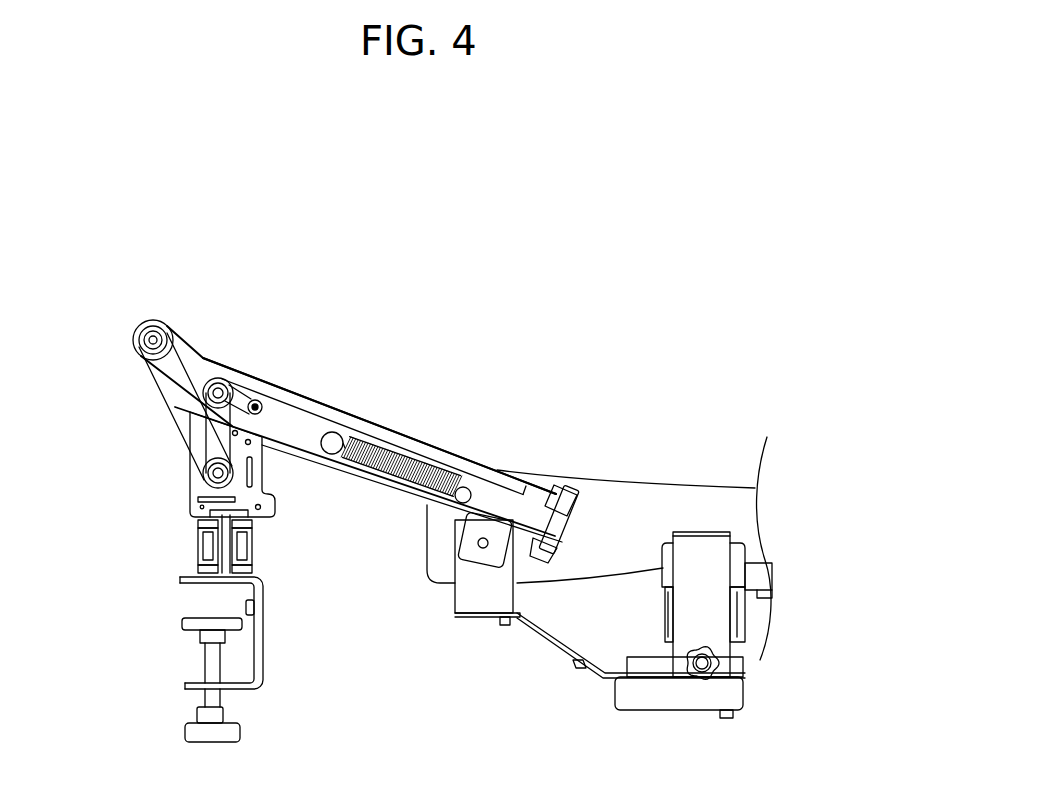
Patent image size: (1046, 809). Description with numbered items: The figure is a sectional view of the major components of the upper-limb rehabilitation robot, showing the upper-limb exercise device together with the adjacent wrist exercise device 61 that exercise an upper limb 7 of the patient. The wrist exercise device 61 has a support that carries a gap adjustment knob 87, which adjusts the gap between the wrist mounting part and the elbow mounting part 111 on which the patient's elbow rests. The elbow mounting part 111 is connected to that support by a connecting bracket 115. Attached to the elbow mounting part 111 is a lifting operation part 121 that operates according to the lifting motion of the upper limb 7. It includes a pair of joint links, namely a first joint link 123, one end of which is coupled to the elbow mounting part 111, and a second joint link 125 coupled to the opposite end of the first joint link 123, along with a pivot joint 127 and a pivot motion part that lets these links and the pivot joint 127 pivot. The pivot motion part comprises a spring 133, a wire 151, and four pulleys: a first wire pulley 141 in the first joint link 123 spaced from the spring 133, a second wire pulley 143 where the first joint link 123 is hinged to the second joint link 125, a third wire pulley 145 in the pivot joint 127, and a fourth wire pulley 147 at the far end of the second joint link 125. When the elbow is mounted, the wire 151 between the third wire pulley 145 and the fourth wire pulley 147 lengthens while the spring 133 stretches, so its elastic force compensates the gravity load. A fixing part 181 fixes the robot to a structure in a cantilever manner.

The upper limb 7 is at (625, 487).
The wrist exercise device 61 is at (723, 613).
The gap adjustment knob 87 is at (700, 681).
The elbow mounting part 111 is at (487, 617).
The connecting bracket 115 is at (548, 642).
The lifting operation part 121 is at (343, 368).
The first joint link 123 is at (457, 453).
The second joint link 125 is at (155, 307).
The pivot joint 127 is at (184, 500).
The spring 133 is at (394, 440).
The first wire pulley 141 is at (268, 438).
The second wire pulley 143 is at (218, 377).
The third wire pulley 145 is at (193, 478).
The fourth wire pulley 147 is at (133, 339).
The wire 151 is at (190, 395).
The fixing part 181 is at (184, 687).